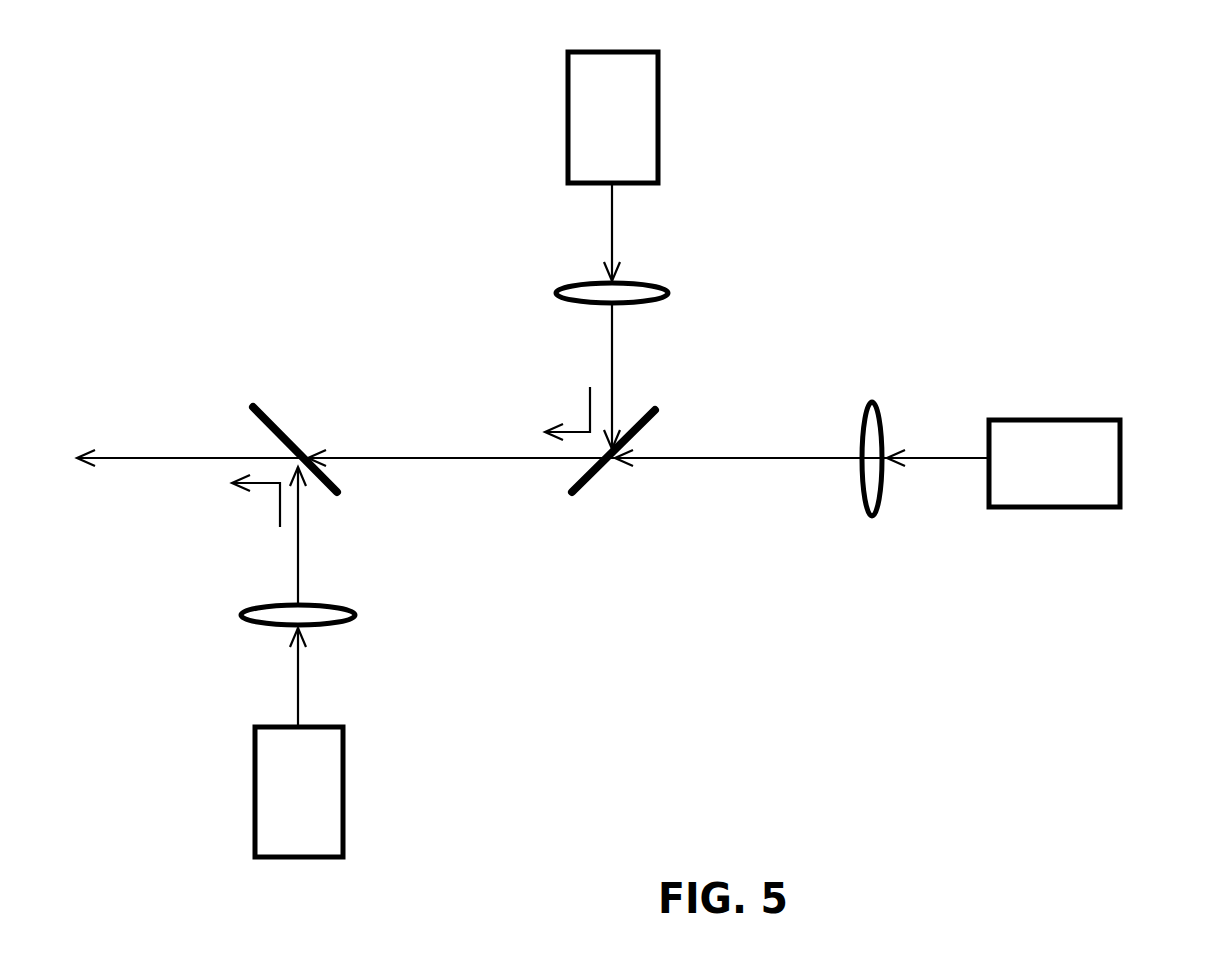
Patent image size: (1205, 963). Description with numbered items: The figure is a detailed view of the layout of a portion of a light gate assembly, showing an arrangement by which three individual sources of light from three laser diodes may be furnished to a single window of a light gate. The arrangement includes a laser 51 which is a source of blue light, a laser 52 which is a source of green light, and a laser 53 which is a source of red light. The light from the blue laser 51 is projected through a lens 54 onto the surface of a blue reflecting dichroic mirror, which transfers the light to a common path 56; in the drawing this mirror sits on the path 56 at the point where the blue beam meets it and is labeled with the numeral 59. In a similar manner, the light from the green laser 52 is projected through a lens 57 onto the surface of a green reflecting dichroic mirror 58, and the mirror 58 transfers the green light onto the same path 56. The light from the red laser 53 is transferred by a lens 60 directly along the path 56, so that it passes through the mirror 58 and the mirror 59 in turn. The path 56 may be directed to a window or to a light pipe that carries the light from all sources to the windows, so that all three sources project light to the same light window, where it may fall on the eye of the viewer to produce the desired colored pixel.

The laser 51 is at (297, 840).
The laser 52 is at (612, 83).
The laser 53 is at (1057, 442).
The lens 54 is at (270, 595).
The path 56 is at (195, 448).
The lens 57 is at (667, 280).
The green reflecting dichroic mirror 58 is at (658, 433).
The dichroic mirror 59 is at (280, 410).
The lens 60 is at (890, 412).